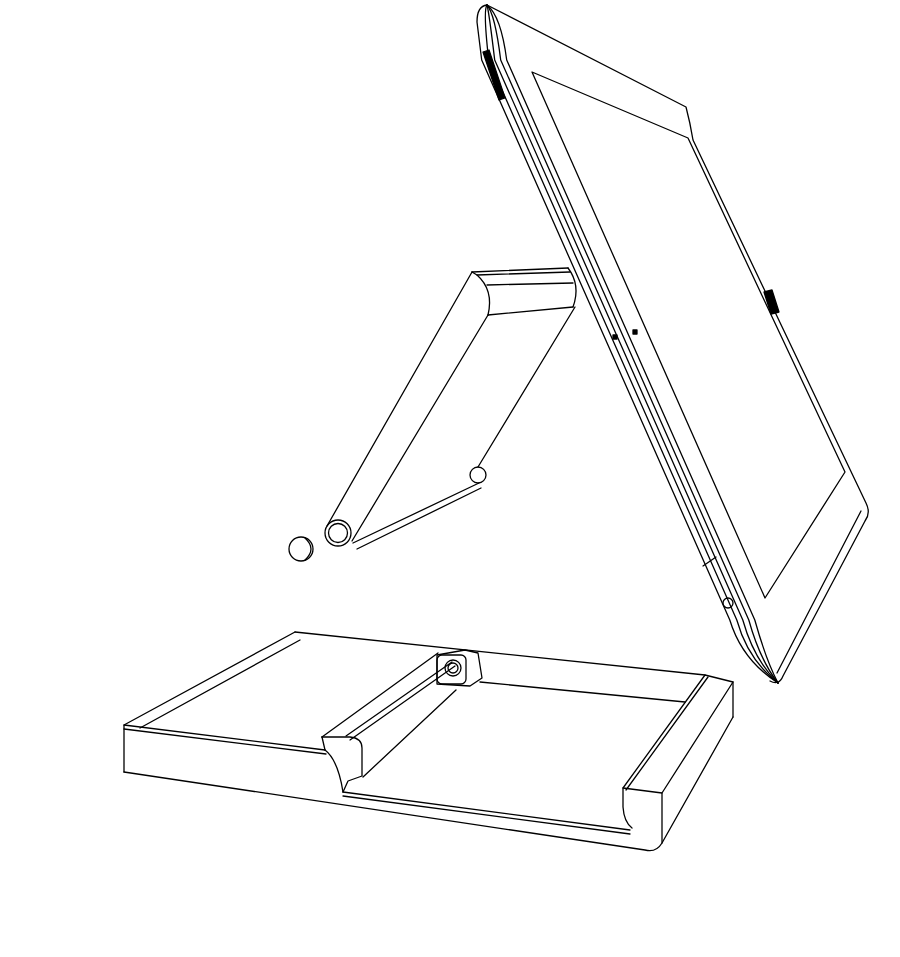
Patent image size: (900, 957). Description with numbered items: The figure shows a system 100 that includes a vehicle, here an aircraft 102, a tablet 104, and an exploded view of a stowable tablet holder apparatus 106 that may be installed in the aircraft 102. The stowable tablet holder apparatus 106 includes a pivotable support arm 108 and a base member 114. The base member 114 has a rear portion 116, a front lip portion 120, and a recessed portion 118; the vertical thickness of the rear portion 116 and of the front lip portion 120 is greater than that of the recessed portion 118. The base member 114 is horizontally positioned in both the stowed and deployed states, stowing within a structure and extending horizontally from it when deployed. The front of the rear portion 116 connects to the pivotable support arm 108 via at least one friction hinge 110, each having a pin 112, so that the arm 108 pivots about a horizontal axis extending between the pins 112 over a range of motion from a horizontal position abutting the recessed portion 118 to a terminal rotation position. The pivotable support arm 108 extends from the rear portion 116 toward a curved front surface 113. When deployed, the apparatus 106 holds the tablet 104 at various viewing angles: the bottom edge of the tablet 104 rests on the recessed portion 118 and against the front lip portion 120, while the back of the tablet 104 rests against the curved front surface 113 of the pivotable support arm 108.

The system 100 is at (198, 58).
The aircraft 102 is at (246, 127).
The tablet 104 is at (611, 80).
The stowable tablet holder apparatus 106 is at (104, 262).
The pivotable support arm 108 is at (395, 405).
The friction hinge 110 is at (330, 520).
The pin 112 is at (293, 552).
The curved front surface 113 is at (537, 293).
The base member 114 is at (320, 803).
The rear portion 116 is at (235, 672).
The recessed portion 118 is at (430, 817).
The front lip portion 120 is at (677, 745).